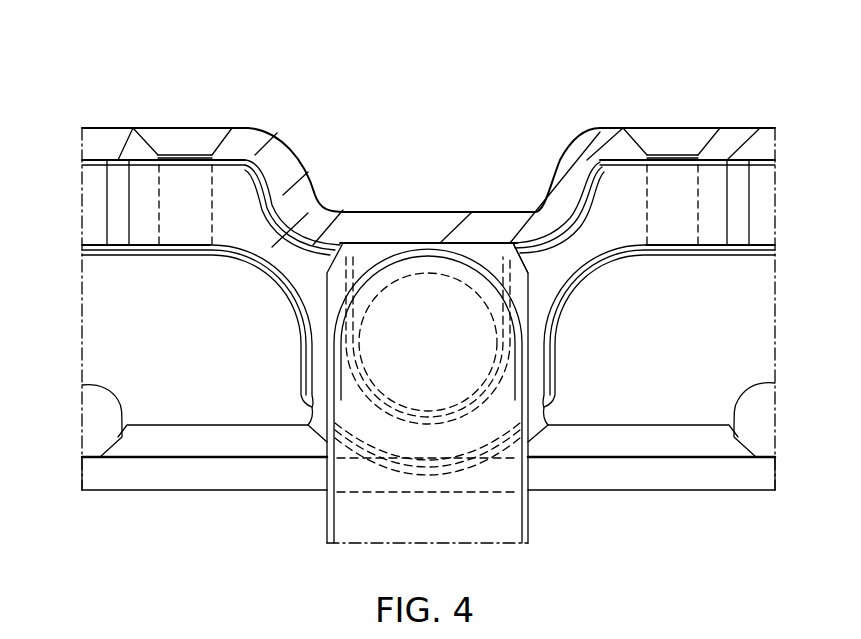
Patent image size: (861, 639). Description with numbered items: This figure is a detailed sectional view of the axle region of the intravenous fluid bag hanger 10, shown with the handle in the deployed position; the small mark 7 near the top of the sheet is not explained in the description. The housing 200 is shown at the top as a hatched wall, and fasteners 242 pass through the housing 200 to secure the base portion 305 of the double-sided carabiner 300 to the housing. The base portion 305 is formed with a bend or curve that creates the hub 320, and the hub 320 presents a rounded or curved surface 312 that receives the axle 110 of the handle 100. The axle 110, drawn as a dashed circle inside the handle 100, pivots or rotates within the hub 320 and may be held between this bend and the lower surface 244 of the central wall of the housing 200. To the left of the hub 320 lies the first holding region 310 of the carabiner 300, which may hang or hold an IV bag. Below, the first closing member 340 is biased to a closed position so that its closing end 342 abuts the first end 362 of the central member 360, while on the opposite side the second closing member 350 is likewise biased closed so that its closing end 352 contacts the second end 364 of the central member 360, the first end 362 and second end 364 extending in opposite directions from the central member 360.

The section reference 7 is at (411, 14).
The bag hanger 10 is at (790, 75).
The handle 100 is at (527, 522).
The axle 110 is at (427, 312).
The housing 200 is at (732, 135).
The fasteners 242 is at (184, 137).
The lower surface 244 is at (403, 243).
The double-sided carabiner 300 is at (324, 209).
The base portion 305 is at (577, 255).
The first holding region 310 is at (107, 333).
The curved surface 312 is at (365, 390).
The hub 320 is at (518, 243).
The first closing member 340 is at (92, 438).
The closing end 342 is at (95, 396).
The second closing member 350 is at (767, 447).
The closing end 352 is at (765, 403).
The central member 360 is at (613, 482).
The first end 362 is at (137, 448).
The second end 364 is at (617, 437).